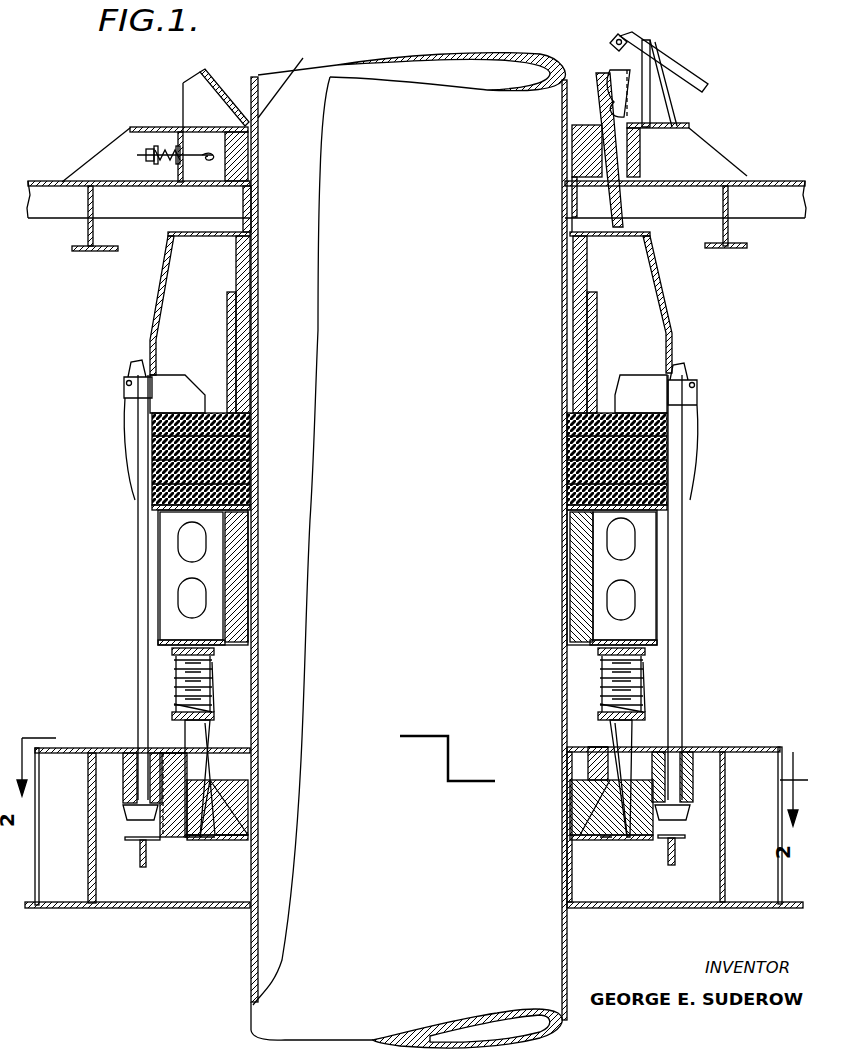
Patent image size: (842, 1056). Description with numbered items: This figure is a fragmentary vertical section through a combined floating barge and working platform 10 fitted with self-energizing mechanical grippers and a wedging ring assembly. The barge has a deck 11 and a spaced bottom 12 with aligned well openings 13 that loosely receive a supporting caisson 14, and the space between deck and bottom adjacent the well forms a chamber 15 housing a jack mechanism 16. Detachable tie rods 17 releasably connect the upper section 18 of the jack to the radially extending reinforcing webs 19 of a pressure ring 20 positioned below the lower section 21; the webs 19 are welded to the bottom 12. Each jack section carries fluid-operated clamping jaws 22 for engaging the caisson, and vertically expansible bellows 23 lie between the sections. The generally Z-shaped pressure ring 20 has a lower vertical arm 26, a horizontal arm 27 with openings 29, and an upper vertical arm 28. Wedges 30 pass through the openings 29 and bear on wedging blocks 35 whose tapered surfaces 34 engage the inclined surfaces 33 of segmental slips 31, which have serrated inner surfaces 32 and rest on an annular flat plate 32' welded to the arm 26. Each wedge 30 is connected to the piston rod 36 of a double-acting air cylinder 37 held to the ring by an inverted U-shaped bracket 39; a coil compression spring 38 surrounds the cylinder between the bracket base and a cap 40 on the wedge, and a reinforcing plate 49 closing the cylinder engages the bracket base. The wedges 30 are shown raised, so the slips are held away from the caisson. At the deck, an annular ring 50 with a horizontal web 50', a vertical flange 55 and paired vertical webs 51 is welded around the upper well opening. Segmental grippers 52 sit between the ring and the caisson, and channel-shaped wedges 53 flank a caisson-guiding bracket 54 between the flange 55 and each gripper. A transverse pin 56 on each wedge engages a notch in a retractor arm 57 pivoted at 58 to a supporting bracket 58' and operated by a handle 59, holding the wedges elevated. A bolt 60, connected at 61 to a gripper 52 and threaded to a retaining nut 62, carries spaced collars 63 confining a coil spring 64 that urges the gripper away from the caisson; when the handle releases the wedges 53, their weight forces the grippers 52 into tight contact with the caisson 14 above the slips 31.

The combined floating barge and working platform 10 is at (62, 914).
The deck 11 is at (45, 181).
The bottom 12 is at (150, 908).
The well openings 13 is at (251, 205).
The caisson 14 is at (518, 70).
The chamber 15 is at (762, 235).
The jack mechanism 16 is at (670, 325).
The detachable tie rods 17 is at (138, 578).
The upper section 18 is at (160, 305).
The reinforcing webs 19 is at (112, 893).
The pressure ring 20 is at (162, 842).
The lower section 21 is at (660, 574).
The grippers or clamping jaws 22 is at (573, 312).
The vertically expansible bellows 23 is at (668, 468).
The lower vertical arm 26 is at (160, 820).
The horizontal arm 27 is at (187, 770).
The upper vertical arm 28 is at (187, 790).
The openings 29 is at (210, 760).
The wedges or tapered members 30 is at (200, 740).
The segmental metal grippers or slips 31 is at (230, 840).
The serrated inner surfaces 32 is at (405, 808).
The annular flat plate 32' is at (418, 865).
The inclined inner surface 33 is at (230, 790).
The tapered surface 34 is at (240, 836).
The wedging block 35 is at (193, 842).
The piston rod 36 is at (212, 708).
The double-acting air cylinder 37 is at (174, 680).
The coil compression spring 38 is at (214, 665).
The inverted U-shaped bracket 39 is at (172, 658).
The cap or plate 40 is at (172, 716).
The reinforcing plate 49 is at (185, 640).
The ring or annular member 50 is at (683, 105).
The horizontal web 50' is at (664, 137).
The vertical webs 51 is at (112, 156).
The segmental grippers or jaws 52 is at (258, 130).
The channel-shaped wedges 53 is at (603, 73).
The caisson-guiding bracket 54 is at (212, 90).
The vertical flange 55 is at (180, 132).
The transverse pin 56 is at (645, 50).
The retractor arm 57 is at (660, 70).
The pivot 58 is at (630, 30).
The supporting bracket 58' is at (657, 79).
The operating handle 59 is at (706, 88).
The bolt 60 is at (204, 148).
The inner end connection 61 is at (288, 78).
The retaining nut 62 is at (147, 150).
The collars 63 is at (150, 160).
The coil spring 64 is at (165, 148).